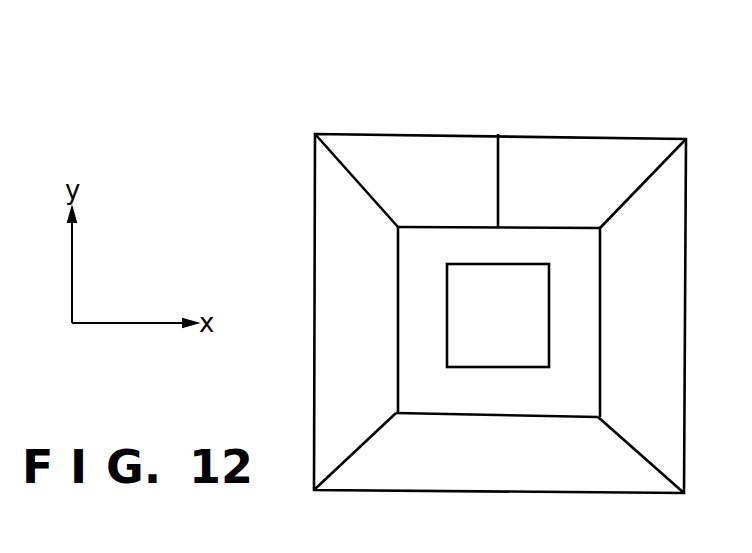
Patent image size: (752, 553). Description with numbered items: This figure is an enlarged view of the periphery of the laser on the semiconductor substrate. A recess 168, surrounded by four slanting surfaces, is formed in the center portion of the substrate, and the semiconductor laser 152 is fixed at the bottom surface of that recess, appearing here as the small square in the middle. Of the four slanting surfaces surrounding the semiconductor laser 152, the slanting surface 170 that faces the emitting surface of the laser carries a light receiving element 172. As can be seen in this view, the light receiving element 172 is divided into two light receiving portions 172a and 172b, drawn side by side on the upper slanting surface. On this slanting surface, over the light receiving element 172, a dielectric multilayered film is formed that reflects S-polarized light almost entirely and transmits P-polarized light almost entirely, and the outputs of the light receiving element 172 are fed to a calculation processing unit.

The semiconductor laser 152 is at (536, 303).
The recess 168 is at (300, 388).
The slanting surface 170 is at (362, 147).
The light receiving element 172 is at (510, 124).
The light receiving portion 172a is at (460, 150).
The light receiving portion 172b is at (577, 150).